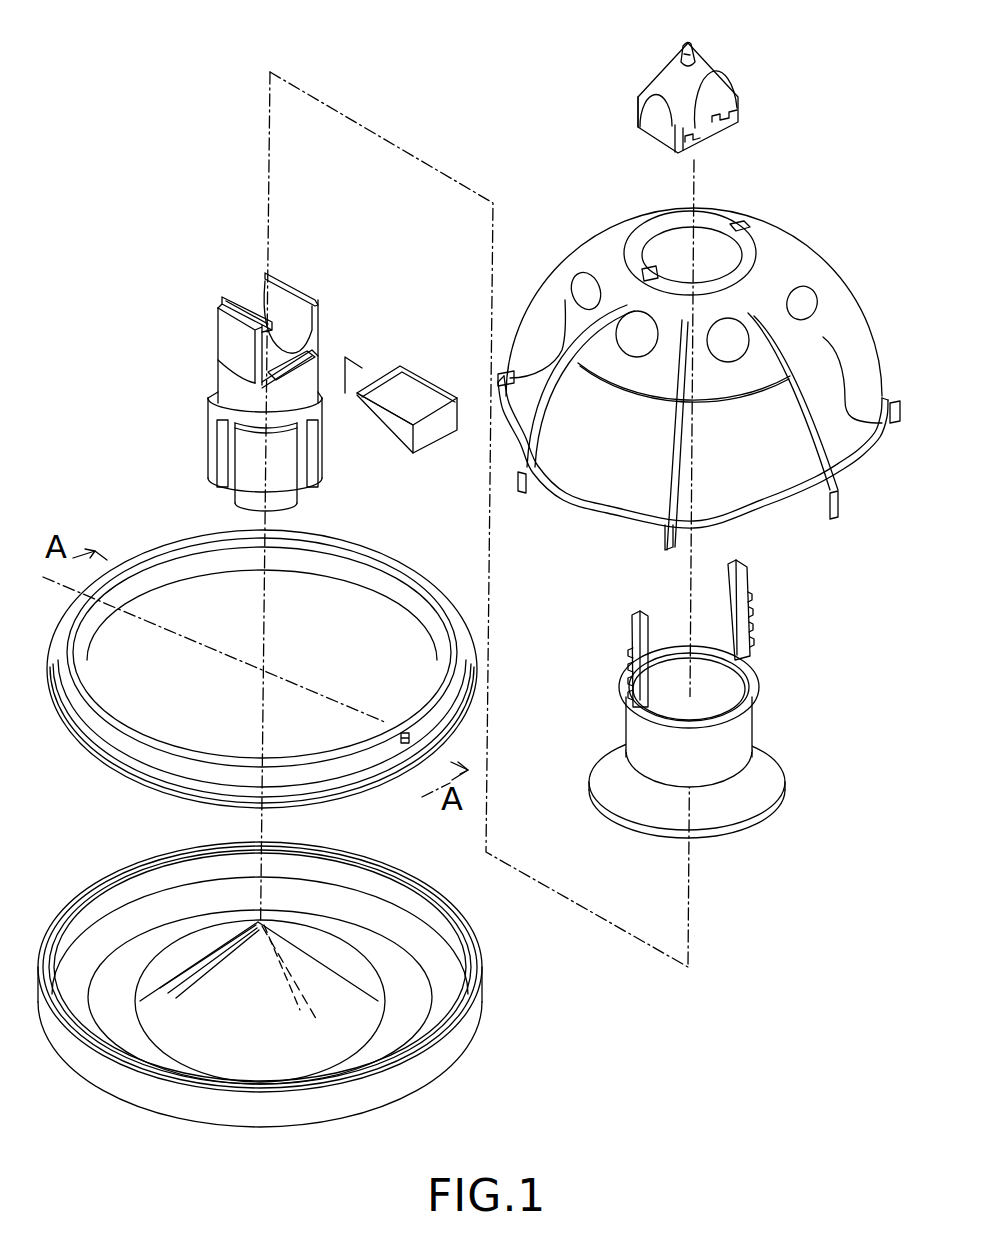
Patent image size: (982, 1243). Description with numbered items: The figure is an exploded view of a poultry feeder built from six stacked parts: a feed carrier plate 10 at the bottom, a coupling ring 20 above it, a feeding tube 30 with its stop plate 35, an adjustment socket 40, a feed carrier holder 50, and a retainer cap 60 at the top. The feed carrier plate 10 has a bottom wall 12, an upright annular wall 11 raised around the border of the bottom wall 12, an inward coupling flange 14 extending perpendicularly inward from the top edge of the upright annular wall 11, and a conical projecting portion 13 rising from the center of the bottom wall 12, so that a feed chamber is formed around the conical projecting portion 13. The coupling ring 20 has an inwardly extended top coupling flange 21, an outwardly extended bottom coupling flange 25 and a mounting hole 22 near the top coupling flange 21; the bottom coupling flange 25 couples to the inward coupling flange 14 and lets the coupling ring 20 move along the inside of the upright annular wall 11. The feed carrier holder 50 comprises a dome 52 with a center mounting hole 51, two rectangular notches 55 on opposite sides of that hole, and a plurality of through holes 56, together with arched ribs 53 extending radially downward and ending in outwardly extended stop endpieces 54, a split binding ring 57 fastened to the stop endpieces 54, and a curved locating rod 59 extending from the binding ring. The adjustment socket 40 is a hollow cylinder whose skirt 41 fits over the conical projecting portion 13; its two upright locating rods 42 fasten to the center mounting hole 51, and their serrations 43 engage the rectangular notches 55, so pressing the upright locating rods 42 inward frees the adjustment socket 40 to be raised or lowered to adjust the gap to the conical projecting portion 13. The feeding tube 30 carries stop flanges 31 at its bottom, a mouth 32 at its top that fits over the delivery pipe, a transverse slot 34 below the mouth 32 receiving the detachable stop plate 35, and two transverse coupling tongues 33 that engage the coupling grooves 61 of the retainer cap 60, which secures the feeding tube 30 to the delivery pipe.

The feed carrier plate 10 is at (296, 985).
The upright annular wall 11 is at (462, 1027).
The bottom wall 12 is at (124, 1035).
The conical projecting portion 13 is at (259, 1030).
The inward coupling flange 14 is at (415, 1059).
The coupling ring 20 is at (253, 657).
The top coupling flange 21 is at (167, 555).
The mounting hole 22 is at (405, 747).
The bottom coupling flange 25 is at (57, 715).
The feeding tube 30 is at (272, 371).
The stop flanges 31 is at (212, 403).
The mouth 32 is at (287, 337).
The transverse coupling tongues 33 is at (232, 293).
The transverse slot 34 is at (285, 370).
The stop plate 35 is at (443, 393).
The adjustment socket 40 is at (704, 699).
The skirt 41 is at (755, 797).
The upright locating rods 42 is at (651, 633).
The serrations 43 is at (633, 658).
The feed carrier holder 50 is at (699, 367).
The center mounting hole 51 is at (678, 235).
The dome 52 is at (787, 272).
The arched ribs 53 is at (545, 433).
The stop endpiece 54 is at (523, 485).
The rectangular notches 55 is at (642, 263).
The through holes 56 is at (637, 348).
The split binding ring 57 is at (603, 505).
The curved locating rod 59 is at (833, 493).
The retainer cap 60 is at (728, 76).
The coupling grooves 61 is at (738, 118).